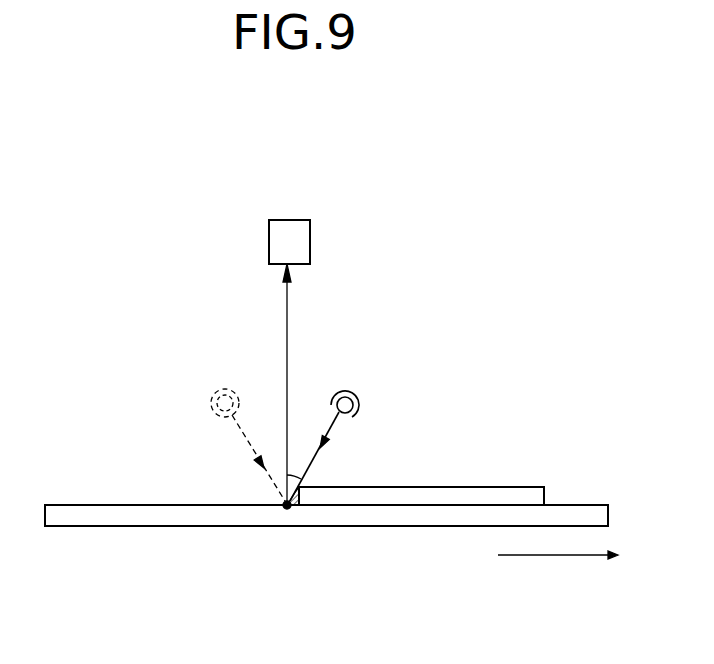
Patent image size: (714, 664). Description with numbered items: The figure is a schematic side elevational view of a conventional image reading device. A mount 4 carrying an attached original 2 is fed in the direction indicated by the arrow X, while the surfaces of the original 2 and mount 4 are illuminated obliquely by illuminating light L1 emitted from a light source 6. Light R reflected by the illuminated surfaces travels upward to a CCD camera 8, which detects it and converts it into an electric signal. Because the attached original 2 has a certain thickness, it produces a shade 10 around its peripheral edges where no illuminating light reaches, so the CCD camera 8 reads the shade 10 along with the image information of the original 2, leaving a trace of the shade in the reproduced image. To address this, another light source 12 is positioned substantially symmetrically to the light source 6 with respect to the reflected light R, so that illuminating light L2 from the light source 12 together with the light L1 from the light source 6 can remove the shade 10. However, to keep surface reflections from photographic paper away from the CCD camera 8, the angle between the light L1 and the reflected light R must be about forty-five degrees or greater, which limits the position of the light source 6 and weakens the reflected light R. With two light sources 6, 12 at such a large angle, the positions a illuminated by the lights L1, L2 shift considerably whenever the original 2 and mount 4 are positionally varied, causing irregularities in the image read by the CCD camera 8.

The original 2 is at (526, 497).
The mount 4 is at (128, 512).
The light source 6 is at (357, 398).
The CCD camera 8 is at (305, 247).
The shade 10 is at (291, 508).
The light source 12 is at (216, 392).
The reflected light R is at (287, 335).
The illuminating light L1 is at (327, 433).
The illuminating light L2 is at (252, 452).
The illuminated position a is at (285, 508).
The feed direction X is at (567, 556).